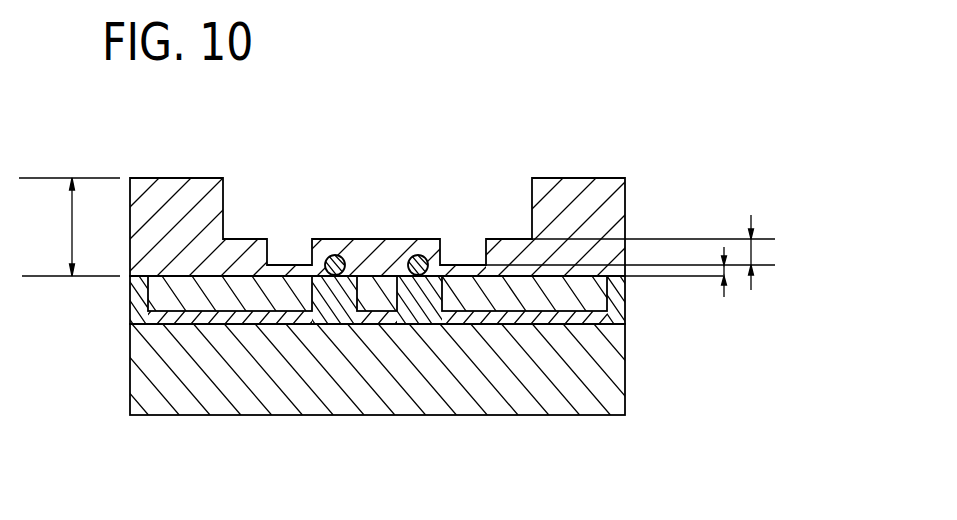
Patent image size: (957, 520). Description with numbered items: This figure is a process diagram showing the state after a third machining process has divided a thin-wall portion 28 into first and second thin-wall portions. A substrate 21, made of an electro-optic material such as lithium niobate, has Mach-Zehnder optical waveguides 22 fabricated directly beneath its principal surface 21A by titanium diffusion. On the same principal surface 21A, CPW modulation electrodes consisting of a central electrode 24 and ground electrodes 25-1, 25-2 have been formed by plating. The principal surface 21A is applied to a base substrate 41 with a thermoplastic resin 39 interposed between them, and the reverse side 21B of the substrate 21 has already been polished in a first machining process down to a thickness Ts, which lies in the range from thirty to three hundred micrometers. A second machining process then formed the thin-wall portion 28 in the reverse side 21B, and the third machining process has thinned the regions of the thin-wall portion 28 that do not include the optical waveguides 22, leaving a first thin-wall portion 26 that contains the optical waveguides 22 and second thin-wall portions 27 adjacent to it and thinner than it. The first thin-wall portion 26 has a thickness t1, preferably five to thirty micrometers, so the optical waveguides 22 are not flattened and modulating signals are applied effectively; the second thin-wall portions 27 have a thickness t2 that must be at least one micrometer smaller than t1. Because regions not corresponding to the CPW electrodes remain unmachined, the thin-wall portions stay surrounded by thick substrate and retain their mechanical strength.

The substrate 21 is at (610, 202).
The principal surface 21A is at (143, 279).
The reverse side 21B is at (183, 177).
The Mach-Zehnder optical waveguides 22 is at (338, 256).
The central electrode 24 is at (377, 298).
The ground electrode 25-1 is at (213, 298).
The ground electrode 25-2 is at (525, 298).
The first thin-wall portion 26 is at (382, 239).
The second thin-wall portions 27 is at (297, 266).
The thin-wall portion 28 is at (513, 250).
The thermoplastic resin 39 is at (615, 293).
The base substrate 41 is at (604, 382).
The thickness of the substrate Ts is at (69, 227).
The thickness of the first thin-wall portion t1 is at (752, 253).
The thickness of the second thin-wall portions t2 is at (727, 272).